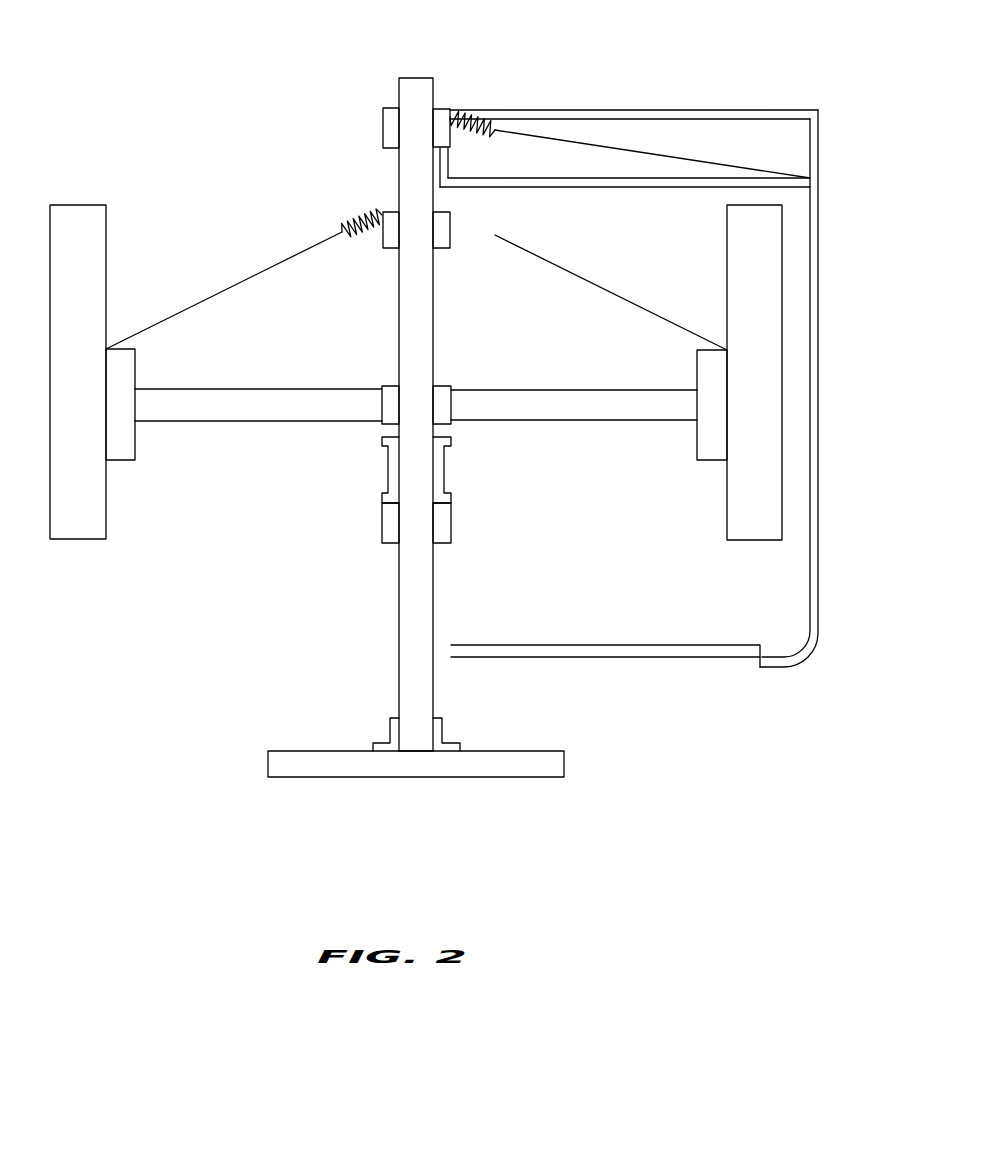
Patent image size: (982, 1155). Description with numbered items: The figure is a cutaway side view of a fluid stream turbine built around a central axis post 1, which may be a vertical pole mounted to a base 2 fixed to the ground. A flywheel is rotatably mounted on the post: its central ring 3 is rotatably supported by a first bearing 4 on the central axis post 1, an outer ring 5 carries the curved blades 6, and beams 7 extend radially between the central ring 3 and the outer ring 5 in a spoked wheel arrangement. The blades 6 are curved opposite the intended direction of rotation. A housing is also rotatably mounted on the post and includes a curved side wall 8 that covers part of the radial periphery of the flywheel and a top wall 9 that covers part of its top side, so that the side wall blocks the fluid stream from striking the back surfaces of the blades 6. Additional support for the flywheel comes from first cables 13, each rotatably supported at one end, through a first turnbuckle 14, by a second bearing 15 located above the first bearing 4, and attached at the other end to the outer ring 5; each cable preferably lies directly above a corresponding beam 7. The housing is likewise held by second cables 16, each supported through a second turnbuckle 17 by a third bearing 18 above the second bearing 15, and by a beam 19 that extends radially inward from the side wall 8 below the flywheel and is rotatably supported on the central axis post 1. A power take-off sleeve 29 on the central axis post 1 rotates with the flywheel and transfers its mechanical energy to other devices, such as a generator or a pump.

The central axis post 1 is at (399, 680).
The base 2 is at (285, 750).
The central ring 3 is at (393, 386).
The first bearing 4 is at (440, 386).
The outer ring 5 is at (122, 450).
The curved blades 6 is at (72, 528).
The beams 7 is at (236, 407).
The curved side wall 8 is at (814, 563).
The top wall 9 is at (560, 140).
The first cables 13 is at (222, 290).
The first turnbuckle 14 is at (360, 220).
The second bearing 15 is at (399, 210).
The second cables 16 is at (647, 150).
The second turnbuckle 17 is at (452, 110).
The third bearing 18 is at (442, 110).
The beam 19 is at (608, 657).
The power take-off sleeve 29 is at (444, 465).